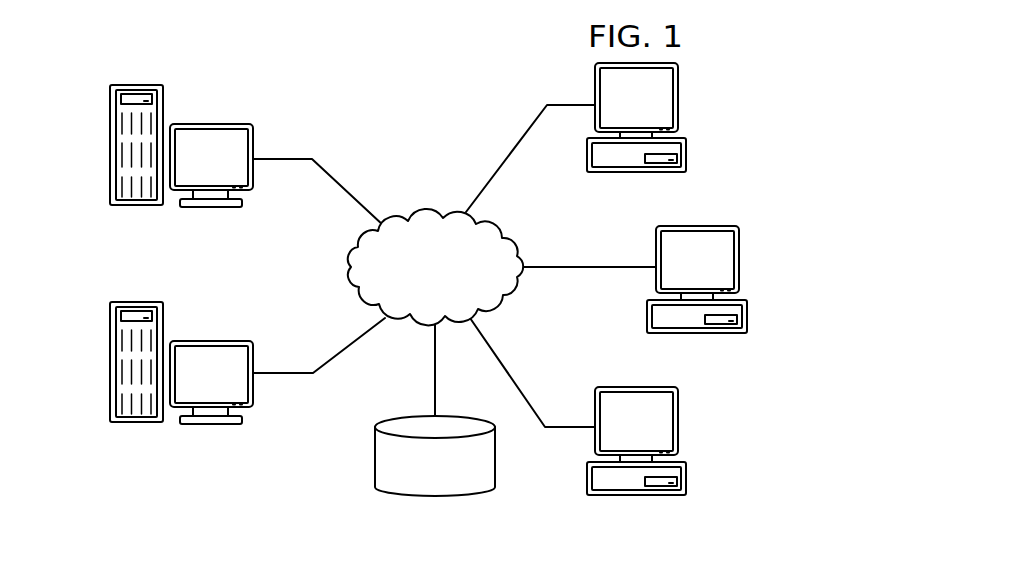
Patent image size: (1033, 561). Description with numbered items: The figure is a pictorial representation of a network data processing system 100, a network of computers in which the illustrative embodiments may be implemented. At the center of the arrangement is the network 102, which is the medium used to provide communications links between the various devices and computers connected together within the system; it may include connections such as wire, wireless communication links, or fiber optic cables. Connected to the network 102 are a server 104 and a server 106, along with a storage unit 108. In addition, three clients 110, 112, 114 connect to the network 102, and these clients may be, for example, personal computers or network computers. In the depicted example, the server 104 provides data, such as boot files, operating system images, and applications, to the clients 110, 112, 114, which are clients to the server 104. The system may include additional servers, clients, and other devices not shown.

The network data processing system 100 is at (316, 75).
The network 102 is at (409, 214).
The server 104 is at (109, 133).
The server 106 is at (109, 375).
The storage unit 108 is at (374, 458).
The client 110 is at (688, 155).
The client 112 is at (749, 317).
The client 114 is at (688, 479).